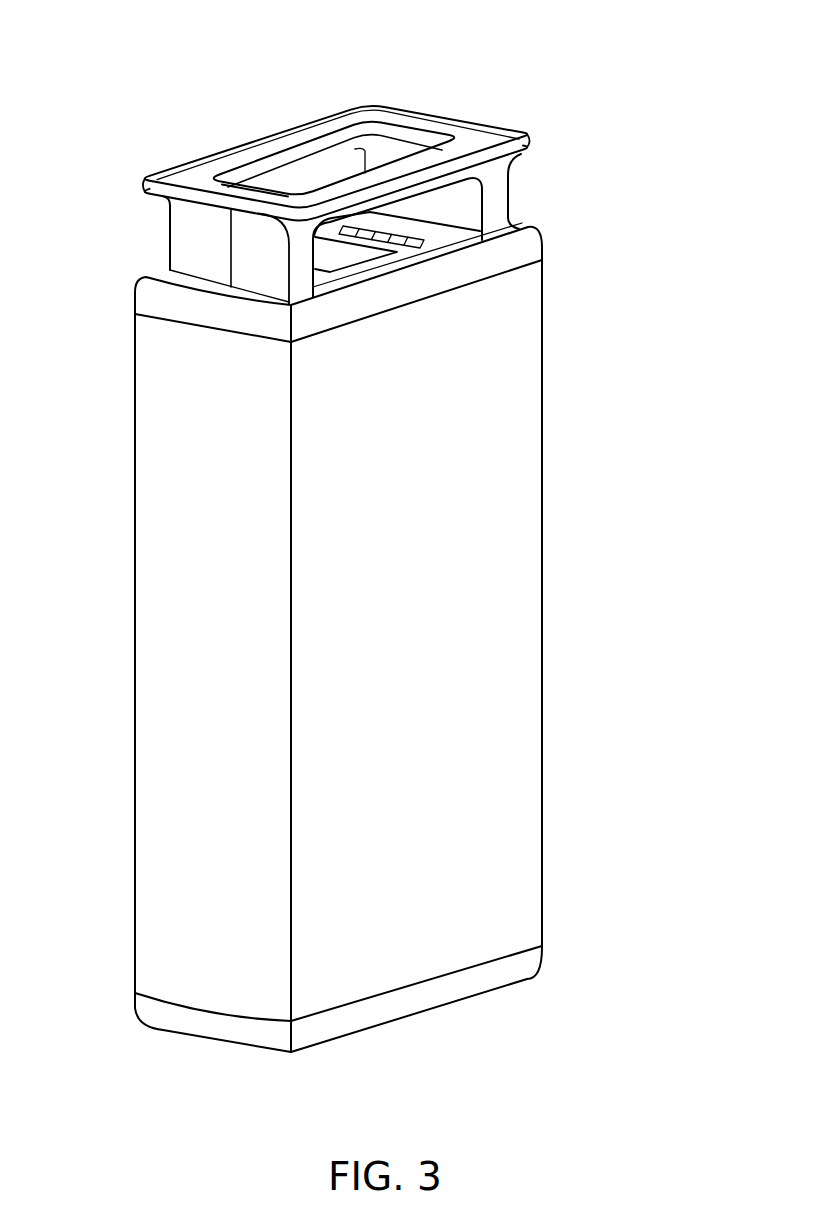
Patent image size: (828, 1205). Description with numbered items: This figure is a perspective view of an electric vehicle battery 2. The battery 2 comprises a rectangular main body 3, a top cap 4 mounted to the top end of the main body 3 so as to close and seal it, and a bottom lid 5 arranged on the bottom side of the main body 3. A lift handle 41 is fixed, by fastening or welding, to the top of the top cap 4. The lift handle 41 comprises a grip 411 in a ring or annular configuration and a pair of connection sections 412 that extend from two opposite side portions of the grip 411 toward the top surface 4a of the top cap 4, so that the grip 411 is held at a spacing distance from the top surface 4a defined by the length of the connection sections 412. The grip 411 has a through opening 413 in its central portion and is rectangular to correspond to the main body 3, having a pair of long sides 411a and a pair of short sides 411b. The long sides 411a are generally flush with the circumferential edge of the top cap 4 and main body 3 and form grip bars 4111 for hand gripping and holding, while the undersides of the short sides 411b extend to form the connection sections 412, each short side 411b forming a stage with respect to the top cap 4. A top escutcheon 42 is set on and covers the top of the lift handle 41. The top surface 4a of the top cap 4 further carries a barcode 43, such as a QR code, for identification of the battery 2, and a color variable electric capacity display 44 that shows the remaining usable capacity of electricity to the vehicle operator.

The battery 2 is at (370, 554).
The main body 3 is at (527, 594).
The top cap 4 is at (352, 331).
The top surface 4a is at (345, 277).
The bottom lid 5 is at (427, 997).
The lift handle 41 is at (370, 203).
The grip 411 is at (370, 203).
The grip bar 4111 is at (422, 154).
The long side 411a is at (250, 140).
The short side 411b is at (453, 112).
The connection section 412 is at (178, 242).
The through opening 413 is at (338, 167).
The top escutcheon 42 is at (192, 180).
The barcode 43 is at (345, 253).
The electric capacity display 44 is at (440, 242).